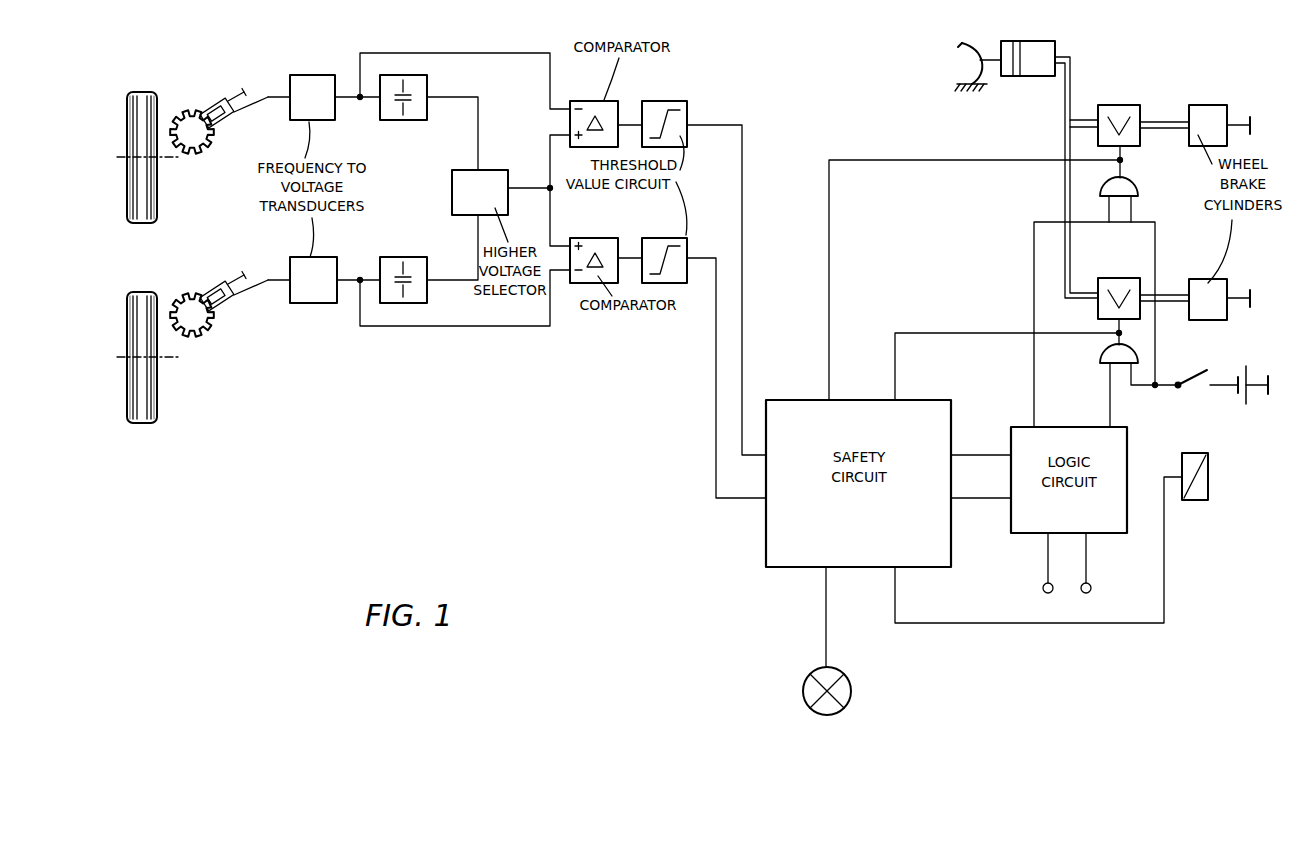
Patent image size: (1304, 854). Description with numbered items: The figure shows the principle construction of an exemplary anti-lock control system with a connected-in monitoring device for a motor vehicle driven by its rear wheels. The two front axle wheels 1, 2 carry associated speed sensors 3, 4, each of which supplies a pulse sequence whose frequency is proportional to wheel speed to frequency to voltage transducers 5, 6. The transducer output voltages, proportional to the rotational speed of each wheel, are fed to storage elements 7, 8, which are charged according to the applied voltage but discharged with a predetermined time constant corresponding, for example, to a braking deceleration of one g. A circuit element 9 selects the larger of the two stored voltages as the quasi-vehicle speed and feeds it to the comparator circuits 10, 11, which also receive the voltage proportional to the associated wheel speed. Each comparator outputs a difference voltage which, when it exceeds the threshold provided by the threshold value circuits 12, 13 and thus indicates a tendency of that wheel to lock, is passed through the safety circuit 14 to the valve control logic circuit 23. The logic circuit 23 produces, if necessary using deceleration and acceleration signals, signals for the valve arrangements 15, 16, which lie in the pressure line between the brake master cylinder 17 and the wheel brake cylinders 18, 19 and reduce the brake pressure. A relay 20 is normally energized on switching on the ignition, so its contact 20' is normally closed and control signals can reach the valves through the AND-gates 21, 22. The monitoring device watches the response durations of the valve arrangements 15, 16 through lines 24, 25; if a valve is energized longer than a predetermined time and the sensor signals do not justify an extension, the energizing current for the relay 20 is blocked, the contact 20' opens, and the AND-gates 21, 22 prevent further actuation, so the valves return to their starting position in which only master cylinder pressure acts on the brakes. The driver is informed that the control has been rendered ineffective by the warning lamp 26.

The wheel 1 is at (134, 165).
The wheel 2 is at (143, 386).
The speed sensor 3 is at (213, 143).
The speed sensor 4 is at (218, 325).
The frequency to voltage transducer 5 is at (314, 76).
The frequency to voltage transducer 6 is at (311, 303).
The storage element 7 is at (406, 120).
The storage element 8 is at (406, 257).
The circuit element 9 is at (499, 172).
The comparator circuit 10 is at (586, 101).
The comparator circuit 11 is at (588, 238).
The threshold value circuit 12 is at (660, 101).
The threshold value circuit 13 is at (660, 238).
The safety circuit 14 is at (778, 515).
The valve arrangement 15 is at (1115, 105).
The valve arrangement 16 is at (1108, 278).
The brake master cylinder 17 is at (1033, 77).
The wheel brake cylinder 18 is at (1205, 94).
The wheel brake cylinder 19 is at (1205, 268).
The relay 20 is at (1197, 495).
The contact 20' is at (1194, 396).
The AND-gate 21 is at (1140, 192).
The AND-gate 22 is at (1108, 365).
The valve control logic circuit 23 is at (1032, 529).
The line 24 is at (950, 161).
The line 25 is at (933, 332).
The lamp 26 is at (854, 684).